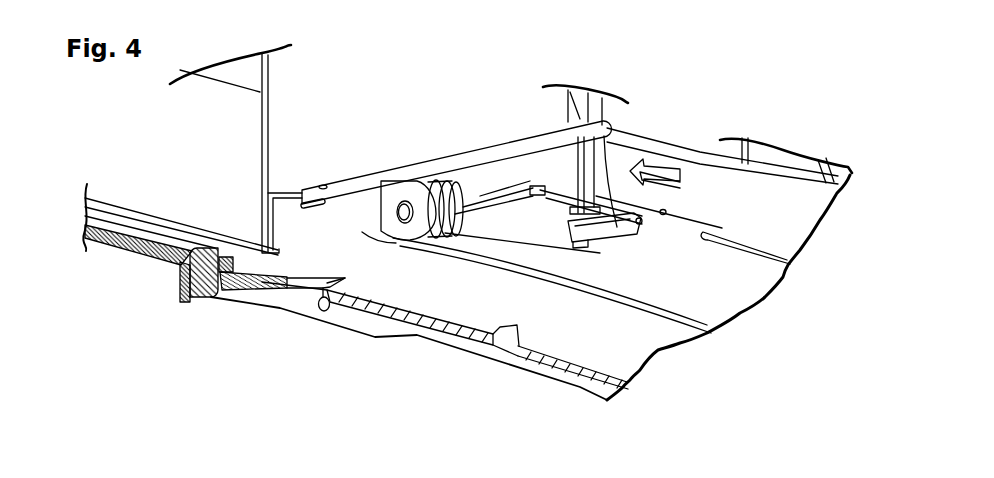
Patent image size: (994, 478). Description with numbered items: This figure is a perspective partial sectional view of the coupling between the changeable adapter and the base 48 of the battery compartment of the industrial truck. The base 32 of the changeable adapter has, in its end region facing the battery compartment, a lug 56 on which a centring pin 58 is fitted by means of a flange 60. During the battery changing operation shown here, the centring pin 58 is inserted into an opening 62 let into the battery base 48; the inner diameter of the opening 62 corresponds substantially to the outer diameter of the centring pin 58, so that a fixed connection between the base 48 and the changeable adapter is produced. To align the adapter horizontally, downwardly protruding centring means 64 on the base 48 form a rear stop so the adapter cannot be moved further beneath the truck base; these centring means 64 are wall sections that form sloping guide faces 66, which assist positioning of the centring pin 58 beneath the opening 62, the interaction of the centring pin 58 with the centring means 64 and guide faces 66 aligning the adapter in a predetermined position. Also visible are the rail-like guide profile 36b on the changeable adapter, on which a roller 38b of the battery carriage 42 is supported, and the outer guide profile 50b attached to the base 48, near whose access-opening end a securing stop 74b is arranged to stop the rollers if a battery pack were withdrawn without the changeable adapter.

The base of the changeable adapter 32 is at (576, 328).
The guide profile 36b is at (620, 298).
The roller 38b is at (447, 212).
The battery carriage 42 is at (341, 213).
The base of the battery compartment 48 is at (130, 248).
The outer guide profile 50b is at (542, 206).
The lug 56 is at (282, 290).
The centring pin 58 is at (200, 297).
The flange 60 is at (237, 292).
The opening 62 is at (230, 262).
The centring means 64 is at (192, 304).
The sloping guide faces 66 is at (217, 297).
The securing stop 74b is at (603, 224).